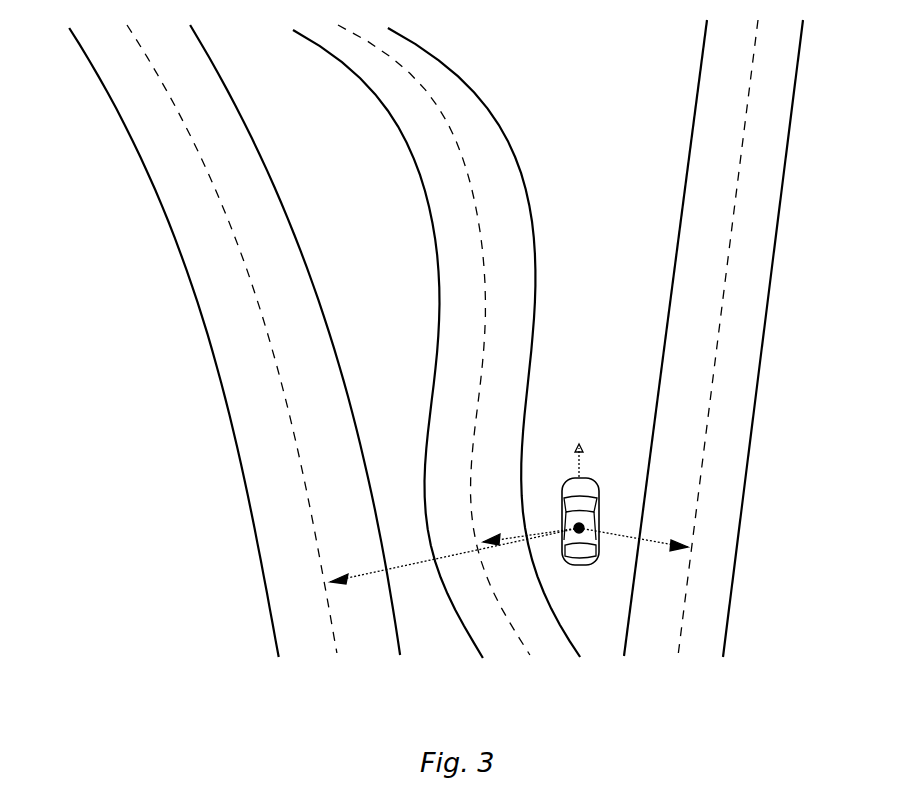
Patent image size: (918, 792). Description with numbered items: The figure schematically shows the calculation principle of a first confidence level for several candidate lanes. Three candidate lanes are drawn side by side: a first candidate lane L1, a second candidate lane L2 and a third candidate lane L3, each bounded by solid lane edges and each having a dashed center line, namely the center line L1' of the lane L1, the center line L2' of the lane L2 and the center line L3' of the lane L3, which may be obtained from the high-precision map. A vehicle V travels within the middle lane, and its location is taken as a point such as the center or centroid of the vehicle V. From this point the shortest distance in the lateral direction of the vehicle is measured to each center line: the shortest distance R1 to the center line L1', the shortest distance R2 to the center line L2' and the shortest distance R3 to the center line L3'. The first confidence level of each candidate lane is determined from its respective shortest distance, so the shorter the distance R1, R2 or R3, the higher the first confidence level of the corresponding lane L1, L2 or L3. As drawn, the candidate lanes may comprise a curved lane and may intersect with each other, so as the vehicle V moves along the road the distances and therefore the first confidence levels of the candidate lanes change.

The first candidate lane L1 is at (234, 352).
The center line of the first candidate lane L1' is at (232, 339).
The second candidate lane L2 is at (436, 354).
The center line of the second candidate lane L2' is at (434, 340).
The third candidate lane L3 is at (713, 350).
The center line of the third candidate lane L3' is at (718, 338).
The shortest distance R1 is at (454, 556).
The shortest distance R2 is at (531, 533).
The shortest distance R3 is at (633, 538).
The vehicle V is at (597, 501).